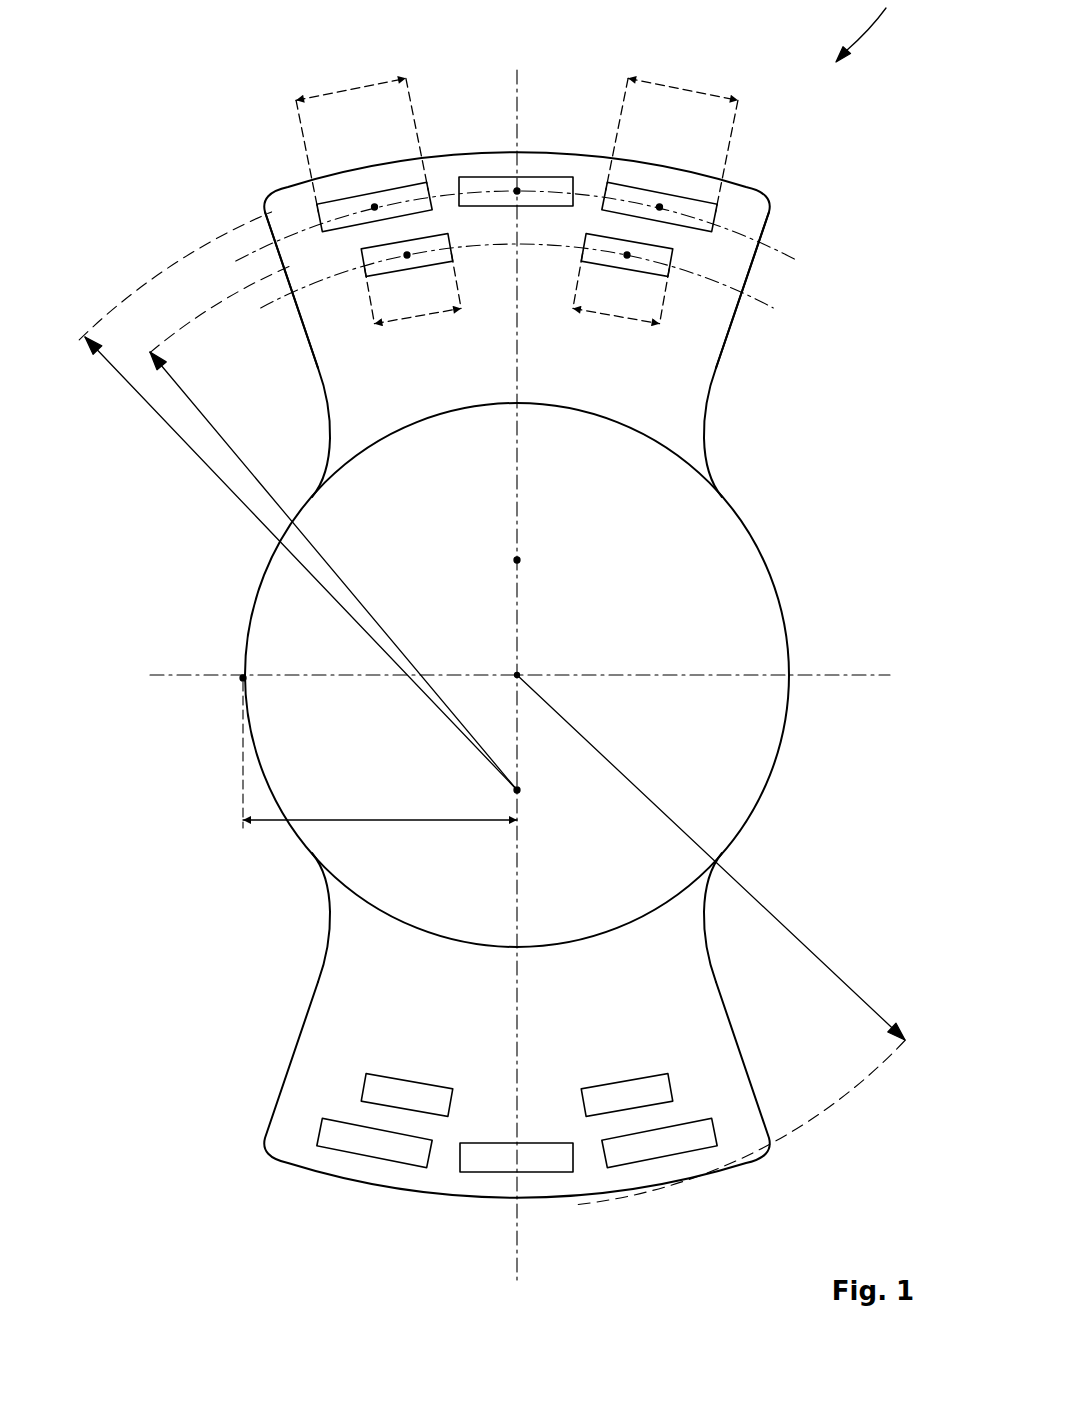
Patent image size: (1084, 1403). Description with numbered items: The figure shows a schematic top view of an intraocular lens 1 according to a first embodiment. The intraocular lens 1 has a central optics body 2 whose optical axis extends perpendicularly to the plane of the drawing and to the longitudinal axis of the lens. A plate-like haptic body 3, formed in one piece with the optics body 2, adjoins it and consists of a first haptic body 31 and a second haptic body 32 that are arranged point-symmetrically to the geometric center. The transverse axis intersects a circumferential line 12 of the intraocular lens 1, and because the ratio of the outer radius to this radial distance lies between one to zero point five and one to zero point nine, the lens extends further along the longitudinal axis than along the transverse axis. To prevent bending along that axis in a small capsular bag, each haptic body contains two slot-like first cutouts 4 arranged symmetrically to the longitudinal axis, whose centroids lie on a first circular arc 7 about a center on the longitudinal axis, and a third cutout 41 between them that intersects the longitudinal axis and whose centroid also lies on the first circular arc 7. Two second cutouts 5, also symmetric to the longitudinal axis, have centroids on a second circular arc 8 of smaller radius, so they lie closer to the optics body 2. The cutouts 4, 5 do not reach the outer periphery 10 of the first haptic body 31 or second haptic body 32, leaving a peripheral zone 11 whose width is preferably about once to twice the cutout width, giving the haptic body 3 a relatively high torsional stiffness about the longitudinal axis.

The intraocular lens 1 is at (870, 31).
The optics body 2 is at (760, 770).
The haptic body 3 is at (712, 398).
The first cutout 4 is at (425, 198).
The third cutout 41 is at (490, 178).
The second cutout 5 is at (455, 248).
The first circular arc 7 is at (802, 245).
The second circular arc 8 is at (782, 302).
The outer periphery 10 is at (275, 262).
The peripheral zone 11 is at (330, 336).
The circumferential line 12 is at (757, 192).
The first haptic body 31 is at (358, 412).
The second haptic body 32 is at (358, 945).